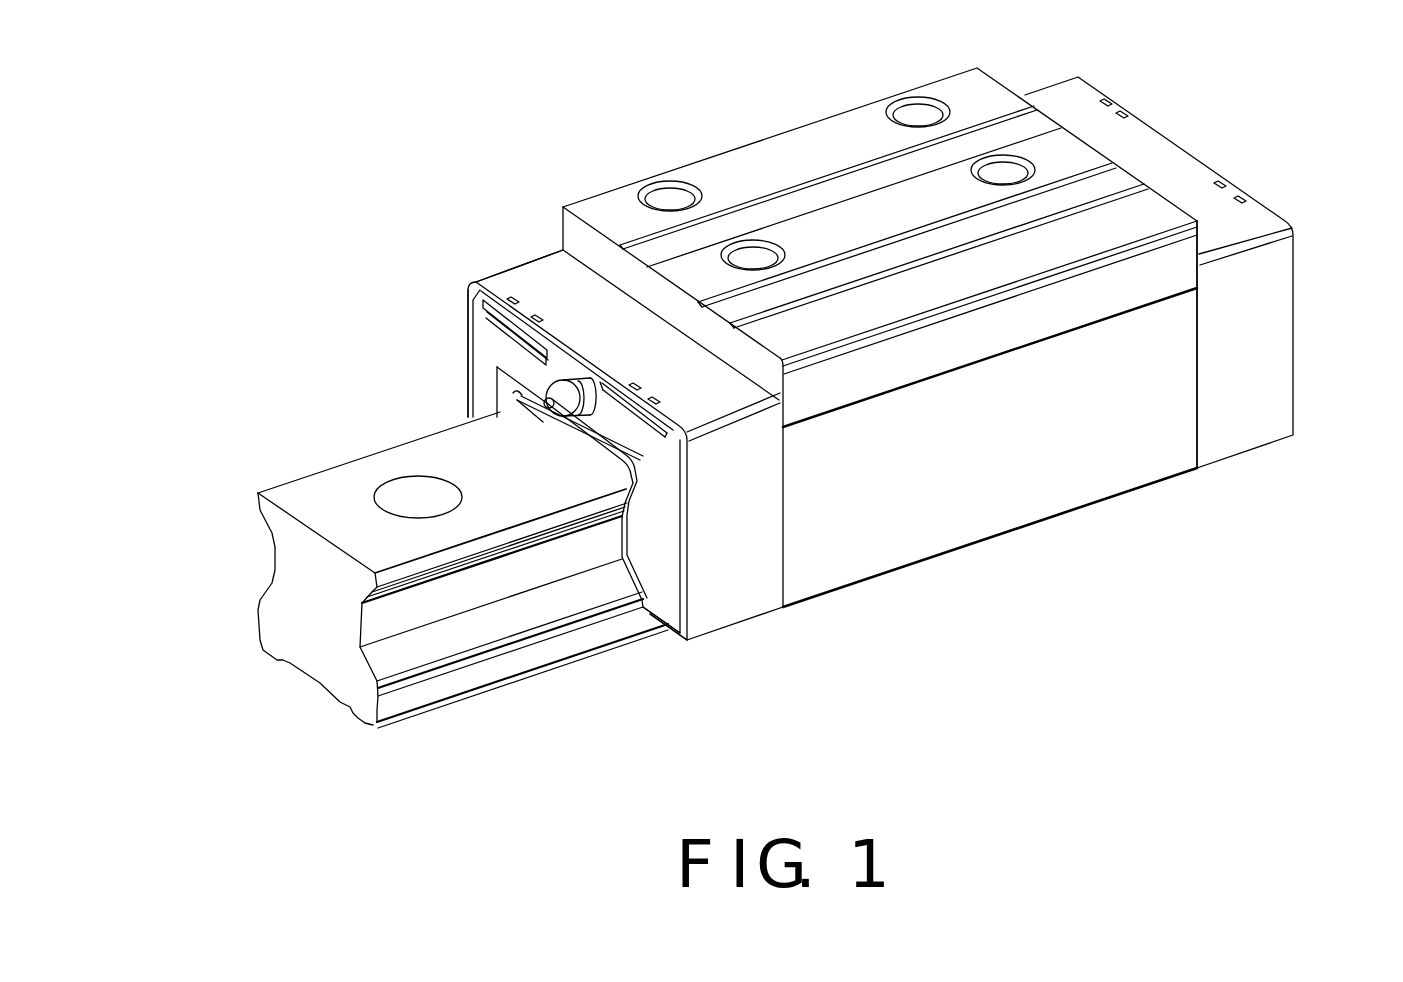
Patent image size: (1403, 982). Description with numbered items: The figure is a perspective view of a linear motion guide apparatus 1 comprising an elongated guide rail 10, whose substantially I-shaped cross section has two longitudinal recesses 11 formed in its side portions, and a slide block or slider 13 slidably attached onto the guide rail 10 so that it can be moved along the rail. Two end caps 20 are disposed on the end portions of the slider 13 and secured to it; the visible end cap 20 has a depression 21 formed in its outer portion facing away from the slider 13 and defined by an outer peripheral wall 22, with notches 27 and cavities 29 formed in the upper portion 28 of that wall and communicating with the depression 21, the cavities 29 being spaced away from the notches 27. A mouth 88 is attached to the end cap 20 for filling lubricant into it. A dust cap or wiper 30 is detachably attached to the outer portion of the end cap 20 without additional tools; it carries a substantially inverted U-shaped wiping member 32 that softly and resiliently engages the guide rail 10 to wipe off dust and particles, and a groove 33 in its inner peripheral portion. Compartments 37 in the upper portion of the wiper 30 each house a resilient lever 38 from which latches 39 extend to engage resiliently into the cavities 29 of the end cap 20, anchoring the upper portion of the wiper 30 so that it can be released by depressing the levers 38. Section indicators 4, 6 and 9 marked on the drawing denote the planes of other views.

The linear motion guide apparatus 1 is at (378, 160).
The section line IV 4 is at (632, 455).
The section line VI 6 is at (640, 400).
The section line IX 9 is at (477, 282).
The guide rail 10 is at (318, 668).
The longitudinal recesses 11 is at (395, 657).
The slider 13 is at (1033, 498).
The end caps 20 is at (725, 605).
The depression 21 is at (677, 640).
The outer peripheral wall 22 is at (683, 573).
The notches 27 is at (497, 300).
The upper portion 28 is at (547, 257).
The cavities 29 is at (537, 320).
The wipers 30 is at (665, 605).
The wiping member 32 is at (647, 565).
The groove 33 is at (607, 540).
The compartments 37 is at (503, 336).
The lever 38 is at (708, 440).
The latches 39 is at (493, 325).
The mouth 88 is at (510, 393).